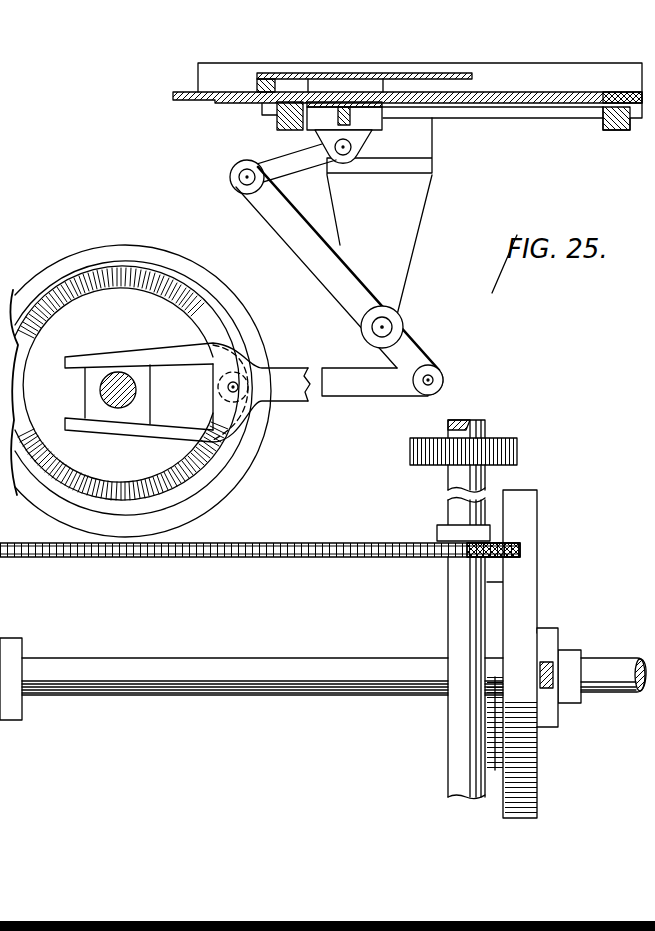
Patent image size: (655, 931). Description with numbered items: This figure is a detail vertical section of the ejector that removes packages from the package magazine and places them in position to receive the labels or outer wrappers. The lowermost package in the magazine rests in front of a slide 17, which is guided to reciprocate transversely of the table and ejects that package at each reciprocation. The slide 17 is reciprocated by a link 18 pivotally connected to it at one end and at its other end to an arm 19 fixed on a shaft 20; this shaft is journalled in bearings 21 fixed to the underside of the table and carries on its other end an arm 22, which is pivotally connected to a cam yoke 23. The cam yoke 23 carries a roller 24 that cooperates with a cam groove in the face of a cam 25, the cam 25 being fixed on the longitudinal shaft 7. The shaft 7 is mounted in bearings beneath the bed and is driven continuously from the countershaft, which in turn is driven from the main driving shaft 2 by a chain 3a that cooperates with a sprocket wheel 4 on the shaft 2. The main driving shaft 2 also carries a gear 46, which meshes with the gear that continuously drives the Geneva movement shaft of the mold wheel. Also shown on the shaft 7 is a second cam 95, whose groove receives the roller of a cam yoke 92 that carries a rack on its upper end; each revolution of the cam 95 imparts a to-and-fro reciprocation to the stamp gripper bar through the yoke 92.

The slide 17 is at (458, 78).
The link 18 is at (285, 162).
The arm 19 is at (292, 238).
The shaft 20 is at (385, 323).
The bearings 21 is at (412, 238).
The arm 22 is at (412, 350).
The cam yoke 23 is at (348, 390).
The roller 24 is at (257, 362).
The cam 25 is at (175, 258).
The longitudinal shaft 7 is at (97, 672).
The gear 46 is at (415, 455).
The sprocket wheel 4 is at (430, 545).
The cam 95 is at (527, 553).
The main driving shaft 2 is at (452, 580).
The cam yoke 92 is at (552, 662).
The chain 3a is at (200, 557).